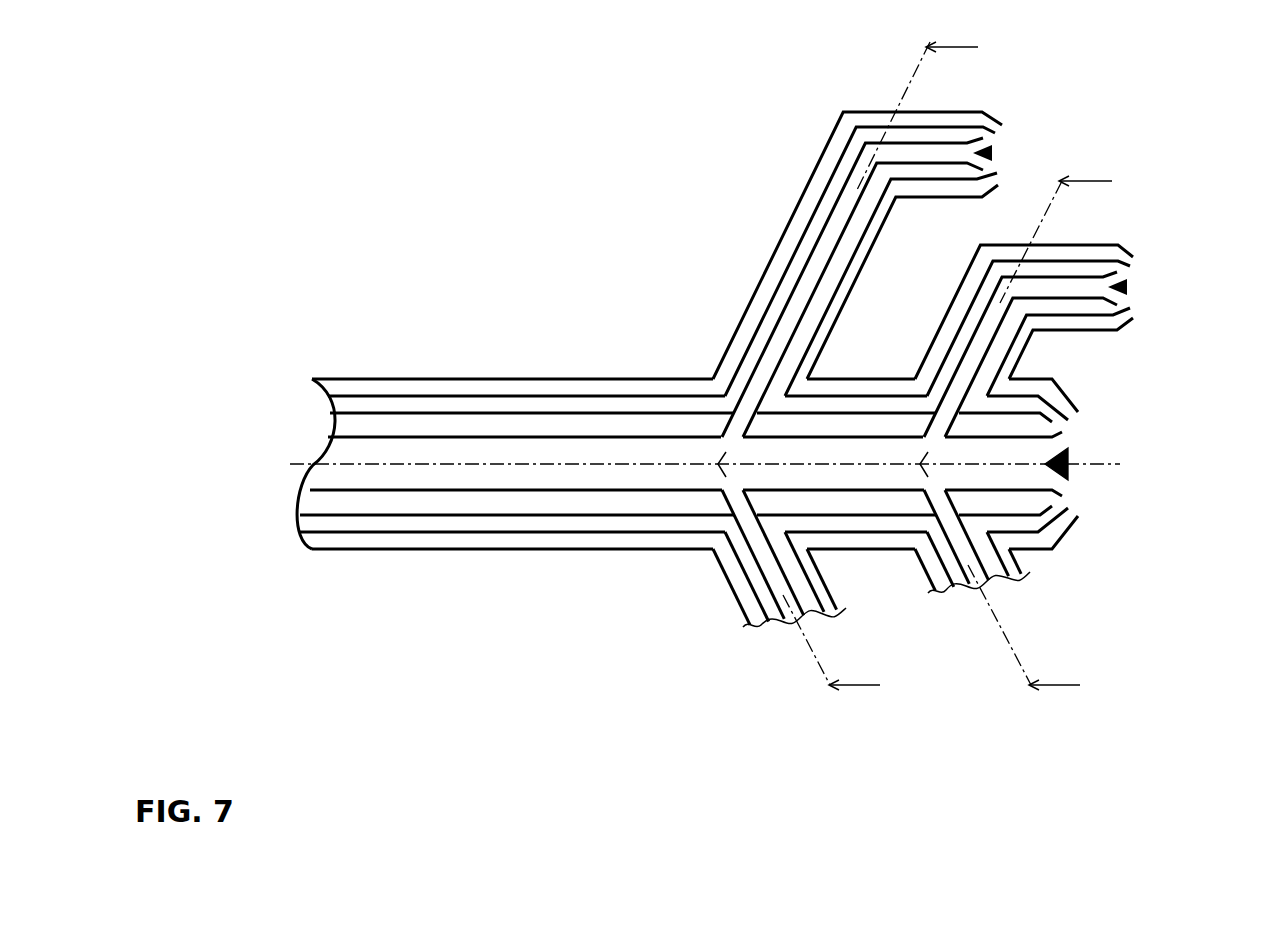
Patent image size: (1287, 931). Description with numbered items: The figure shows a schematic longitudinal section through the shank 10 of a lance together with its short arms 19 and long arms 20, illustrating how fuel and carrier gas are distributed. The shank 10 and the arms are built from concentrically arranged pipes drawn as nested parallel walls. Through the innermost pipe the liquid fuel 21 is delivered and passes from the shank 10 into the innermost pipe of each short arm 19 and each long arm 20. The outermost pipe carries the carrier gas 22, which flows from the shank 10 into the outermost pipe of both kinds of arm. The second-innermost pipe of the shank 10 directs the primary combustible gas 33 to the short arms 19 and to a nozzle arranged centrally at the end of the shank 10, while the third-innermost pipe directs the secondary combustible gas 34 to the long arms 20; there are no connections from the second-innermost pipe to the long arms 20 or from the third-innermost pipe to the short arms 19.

The shank 10 is at (434, 372).
The short arm 19 is at (920, 570).
The long arm 20 is at (733, 600).
The liquid fuel 21 is at (801, 289).
The carrier gas 22 is at (826, 159).
The primary combustible gas 33 is at (995, 358).
The secondary combustible gas 34 is at (813, 221).